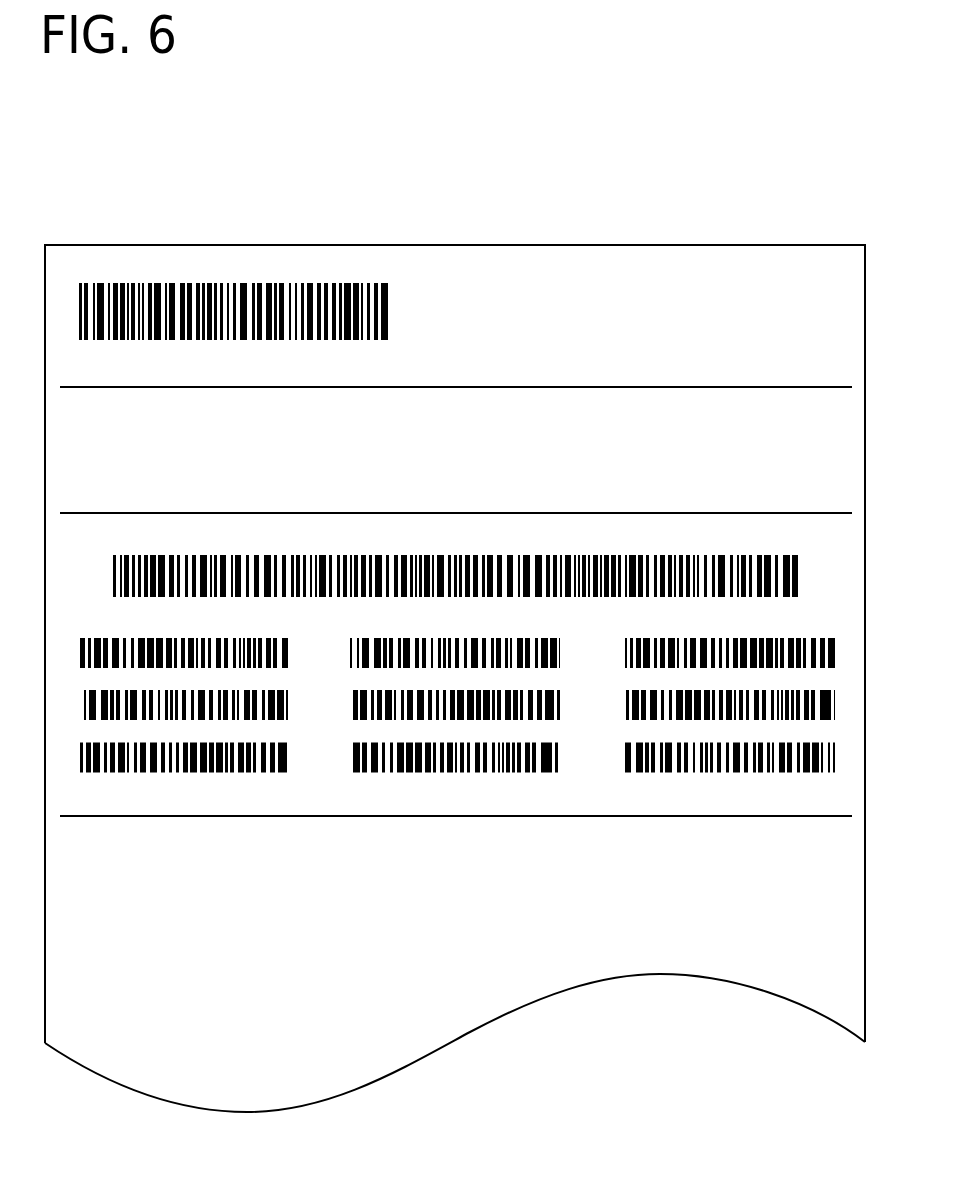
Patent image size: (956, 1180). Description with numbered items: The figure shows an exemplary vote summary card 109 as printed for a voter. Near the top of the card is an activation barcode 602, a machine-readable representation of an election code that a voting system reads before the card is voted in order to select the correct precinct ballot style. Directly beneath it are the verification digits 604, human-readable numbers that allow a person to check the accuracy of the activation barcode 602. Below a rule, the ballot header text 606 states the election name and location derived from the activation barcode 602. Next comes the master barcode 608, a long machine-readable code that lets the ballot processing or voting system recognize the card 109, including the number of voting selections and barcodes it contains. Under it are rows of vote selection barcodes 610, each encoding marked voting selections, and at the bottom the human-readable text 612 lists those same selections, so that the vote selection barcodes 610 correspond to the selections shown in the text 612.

The vote summary card 109 is at (612, 244).
The activation barcode 602 is at (393, 306).
The verification digits 604 is at (277, 364).
The ballot header text 606 is at (480, 435).
The master barcode 608 is at (582, 543).
The vote selection barcodes 610 is at (598, 797).
The text 612 is at (457, 872).